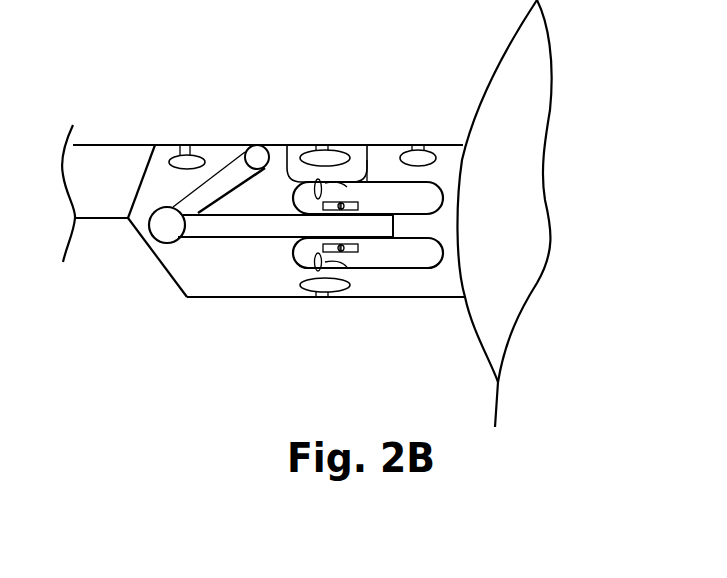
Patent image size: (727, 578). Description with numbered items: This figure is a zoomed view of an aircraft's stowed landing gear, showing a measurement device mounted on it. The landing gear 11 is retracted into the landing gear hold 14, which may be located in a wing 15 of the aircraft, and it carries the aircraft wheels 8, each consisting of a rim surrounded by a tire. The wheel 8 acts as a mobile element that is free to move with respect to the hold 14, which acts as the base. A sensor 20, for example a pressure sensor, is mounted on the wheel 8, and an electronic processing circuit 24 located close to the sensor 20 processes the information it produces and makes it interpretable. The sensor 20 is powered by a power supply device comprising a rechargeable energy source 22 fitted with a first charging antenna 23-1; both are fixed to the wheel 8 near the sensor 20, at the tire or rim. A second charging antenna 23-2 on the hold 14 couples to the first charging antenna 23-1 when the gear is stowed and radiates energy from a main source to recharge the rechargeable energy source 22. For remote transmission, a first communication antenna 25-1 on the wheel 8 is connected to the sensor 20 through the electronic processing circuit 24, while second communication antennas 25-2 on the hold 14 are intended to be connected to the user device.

The wheel 8 is at (420, 193).
The landing gear 11 is at (228, 174).
The landing gear hold 14 is at (445, 225).
The wing 15 is at (110, 155).
The sensor 20 is at (303, 244).
The rechargeable energy source 22 is at (357, 247).
The electronic processing circuit 24 is at (355, 268).
The first charging antenna 23-1 is at (367, 165).
The second charging antenna 23-2 is at (316, 148).
The first communication antenna 25-1 is at (287, 145).
The second communication antenna 25-2 is at (180, 157).